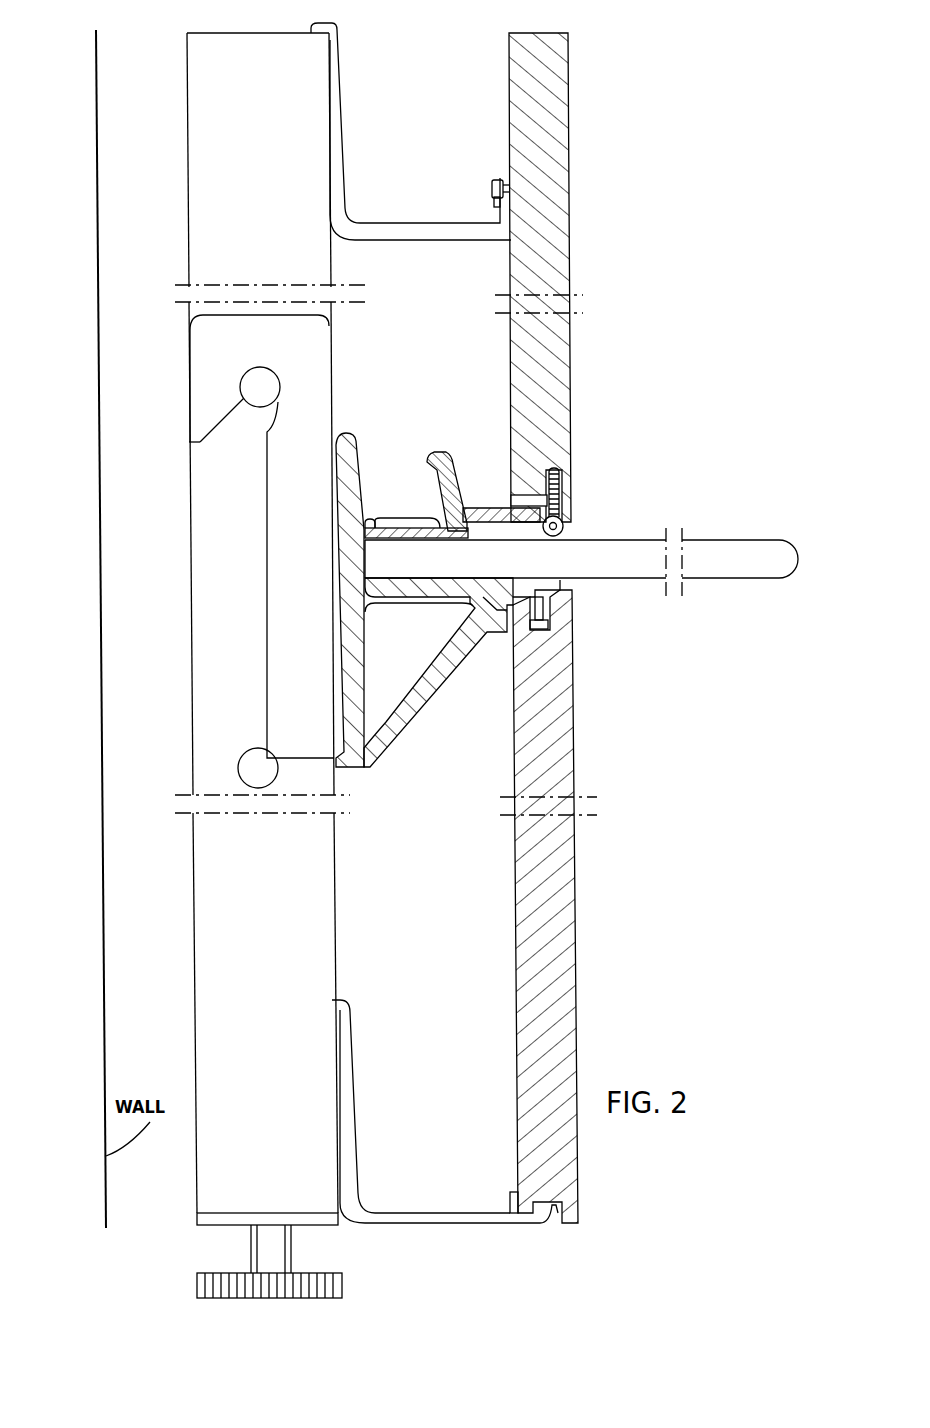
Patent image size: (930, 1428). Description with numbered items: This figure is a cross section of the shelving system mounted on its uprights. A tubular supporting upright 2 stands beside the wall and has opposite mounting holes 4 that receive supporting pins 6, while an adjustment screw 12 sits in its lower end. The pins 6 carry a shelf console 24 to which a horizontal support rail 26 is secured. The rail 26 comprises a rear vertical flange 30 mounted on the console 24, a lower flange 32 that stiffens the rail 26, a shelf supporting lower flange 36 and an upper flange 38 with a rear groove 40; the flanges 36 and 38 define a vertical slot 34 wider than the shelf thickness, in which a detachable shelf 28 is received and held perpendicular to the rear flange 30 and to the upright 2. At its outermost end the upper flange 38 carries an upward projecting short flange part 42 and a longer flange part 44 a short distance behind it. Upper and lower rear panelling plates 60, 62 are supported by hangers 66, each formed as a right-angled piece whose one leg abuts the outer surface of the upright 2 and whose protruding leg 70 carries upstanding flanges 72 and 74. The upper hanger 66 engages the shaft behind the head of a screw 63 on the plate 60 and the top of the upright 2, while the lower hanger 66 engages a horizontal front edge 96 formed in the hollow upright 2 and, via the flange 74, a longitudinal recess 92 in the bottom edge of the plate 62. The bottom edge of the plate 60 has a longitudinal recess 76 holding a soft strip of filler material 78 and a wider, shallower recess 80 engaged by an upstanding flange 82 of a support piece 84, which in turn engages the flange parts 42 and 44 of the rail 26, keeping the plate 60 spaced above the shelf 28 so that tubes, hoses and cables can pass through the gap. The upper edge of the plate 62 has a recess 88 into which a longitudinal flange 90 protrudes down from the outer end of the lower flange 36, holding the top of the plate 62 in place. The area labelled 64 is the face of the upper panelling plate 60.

The supporting upright 2 is at (245, 250).
The mounting hole 4 is at (245, 757).
The supporting pin 6 is at (250, 390).
The adjustment screw 12 is at (218, 1273).
The shelf console 24 is at (275, 325).
The support rail 26 is at (410, 716).
The shelf 28 is at (713, 540).
The rear vertical flange 30 is at (364, 725).
The lower flange 32 is at (412, 711).
The slot 34 is at (422, 583).
The shelf supporting lower flange 36 is at (565, 581).
The upper flange 38 is at (423, 528).
The rear groove 40 is at (370, 519).
The short flange part 42 is at (470, 522).
The longer flange part 44 is at (443, 495).
The upper rear panelling plate 60 is at (569, 100).
The lower rear panelling plate 62 is at (565, 875).
The screw 63 is at (492, 186).
The wall block face 64 is at (557, 222).
The hanger 66 is at (345, 111).
The protruding leg 70 is at (408, 238).
The upstanding flange 72 is at (542, 1226).
The upstanding flange 74 is at (510, 1202).
The longitudinal recess 76 is at (554, 474).
The soft strip of filler material 78 is at (560, 490).
The longitudinal recess 80 is at (560, 505).
The upstanding flange 82 is at (563, 526).
The support piece 84 is at (457, 478).
The longitudinal recess 88 is at (550, 628).
The longitudinal flange 90 is at (545, 612).
The longitudinal recess 92 is at (554, 1212).
The horizontal front edge 96 is at (341, 1005).